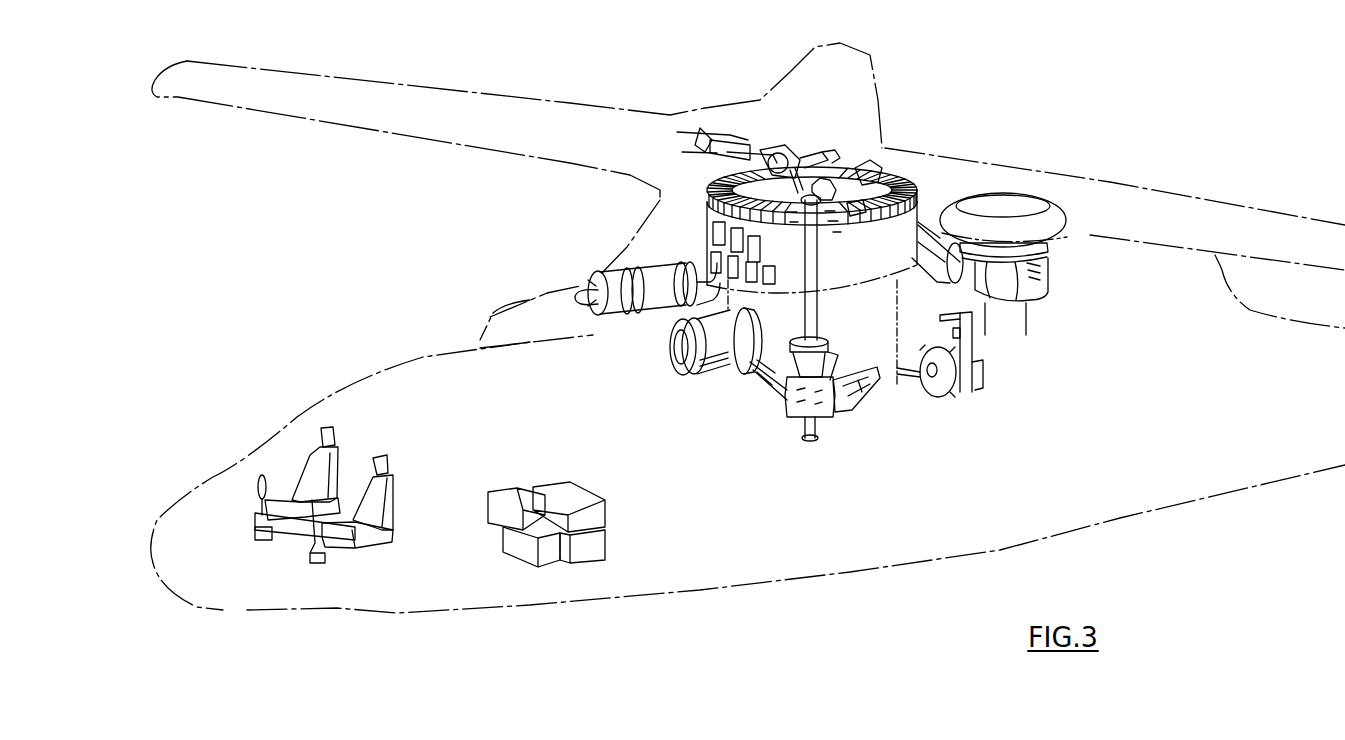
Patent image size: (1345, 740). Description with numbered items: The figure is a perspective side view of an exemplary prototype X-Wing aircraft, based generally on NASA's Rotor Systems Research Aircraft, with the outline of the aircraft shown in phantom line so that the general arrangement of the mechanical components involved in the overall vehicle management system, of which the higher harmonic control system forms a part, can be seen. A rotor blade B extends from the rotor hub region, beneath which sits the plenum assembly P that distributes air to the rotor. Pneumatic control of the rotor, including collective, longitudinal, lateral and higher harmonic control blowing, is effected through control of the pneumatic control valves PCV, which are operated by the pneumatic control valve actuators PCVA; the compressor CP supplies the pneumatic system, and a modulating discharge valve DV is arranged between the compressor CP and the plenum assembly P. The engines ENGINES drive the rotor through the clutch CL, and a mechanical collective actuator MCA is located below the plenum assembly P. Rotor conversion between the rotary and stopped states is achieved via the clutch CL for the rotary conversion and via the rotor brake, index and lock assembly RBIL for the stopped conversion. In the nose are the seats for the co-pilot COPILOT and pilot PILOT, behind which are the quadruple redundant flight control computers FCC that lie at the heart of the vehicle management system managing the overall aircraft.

The blade B is at (288, 110).
The plenum assembly P is at (862, 150).
The pneumatic control valves PCV is at (700, 195).
The pneumatic control valve actuators PCVA is at (907, 160).
The modulating discharge valve DV is at (930, 222).
The compressor CP is at (1050, 195).
The engines ENGINES is at (643, 267).
The clutch CL is at (717, 377).
The mechanical collective actuator MCA is at (862, 405).
The rotor brake/indexing/locking assembly RBIL is at (978, 371).
The co-pilot COPILOT is at (298, 465).
The pilot PILOT is at (355, 556).
The flight control computers FCC is at (530, 567).